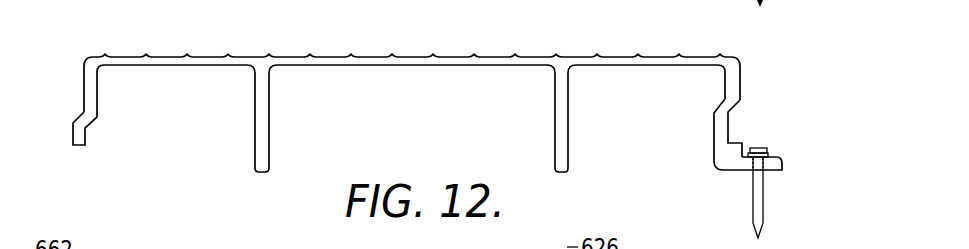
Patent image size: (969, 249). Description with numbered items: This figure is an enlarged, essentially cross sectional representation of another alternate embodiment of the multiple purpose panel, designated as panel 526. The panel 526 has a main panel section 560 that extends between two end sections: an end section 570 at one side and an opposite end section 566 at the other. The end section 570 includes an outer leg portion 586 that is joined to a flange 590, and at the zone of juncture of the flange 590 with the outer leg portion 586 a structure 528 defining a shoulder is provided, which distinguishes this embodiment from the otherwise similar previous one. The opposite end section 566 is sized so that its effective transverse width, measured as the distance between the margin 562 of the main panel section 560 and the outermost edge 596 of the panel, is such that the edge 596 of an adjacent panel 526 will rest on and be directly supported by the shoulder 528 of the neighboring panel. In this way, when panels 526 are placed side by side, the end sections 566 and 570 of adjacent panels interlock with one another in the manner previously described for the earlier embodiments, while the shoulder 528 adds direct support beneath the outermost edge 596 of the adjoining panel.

The panel 526 is at (448, 119).
The structure defining a shoulder 528 is at (731, 138).
The main panel section 560 is at (344, 65).
The margin 562 is at (85, 60).
The opposite end section 566 is at (103, 93).
The end section 570 is at (723, 82).
The outer leg portion 586 is at (714, 140).
The flange 590 is at (775, 168).
The outermost edge 596 is at (78, 147).